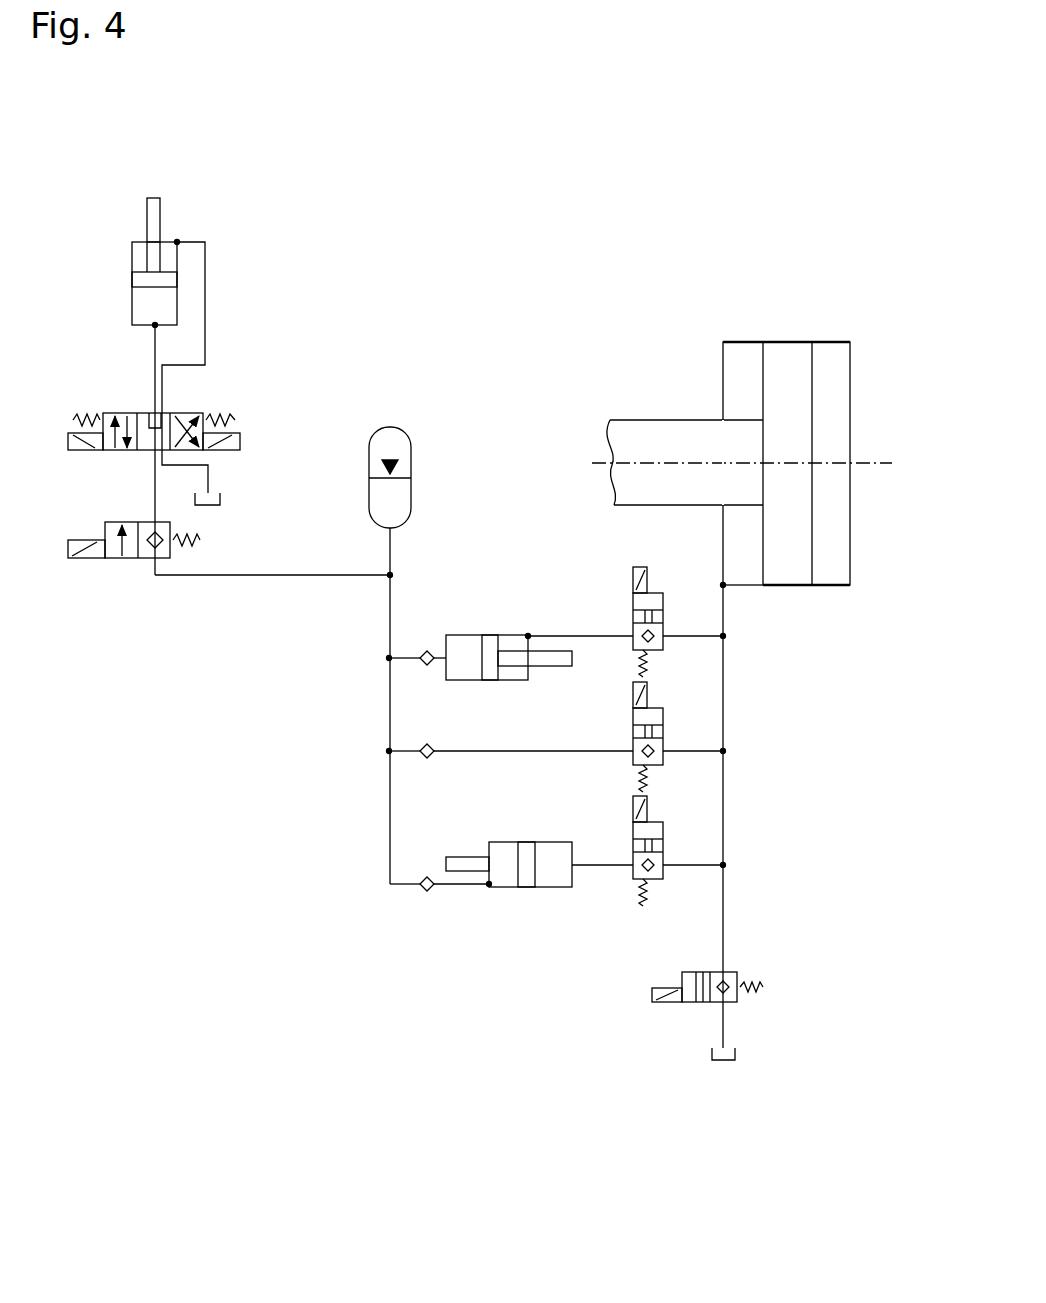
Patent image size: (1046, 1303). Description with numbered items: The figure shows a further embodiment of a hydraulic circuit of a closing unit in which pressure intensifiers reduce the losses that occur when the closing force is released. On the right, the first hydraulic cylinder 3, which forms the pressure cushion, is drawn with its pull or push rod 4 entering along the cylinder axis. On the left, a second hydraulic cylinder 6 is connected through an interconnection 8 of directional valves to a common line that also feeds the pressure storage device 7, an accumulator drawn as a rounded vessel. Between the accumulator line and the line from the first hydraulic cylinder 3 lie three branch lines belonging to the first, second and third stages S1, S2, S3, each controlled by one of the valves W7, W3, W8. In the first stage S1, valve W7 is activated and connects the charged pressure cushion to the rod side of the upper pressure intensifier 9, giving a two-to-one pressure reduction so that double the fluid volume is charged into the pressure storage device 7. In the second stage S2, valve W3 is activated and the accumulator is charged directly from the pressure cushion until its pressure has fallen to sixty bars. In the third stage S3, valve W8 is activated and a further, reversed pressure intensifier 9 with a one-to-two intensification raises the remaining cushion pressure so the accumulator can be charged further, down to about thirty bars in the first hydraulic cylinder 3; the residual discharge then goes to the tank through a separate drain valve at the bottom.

The first hydraulic cylinder 3 is at (778, 312).
The pull or push rod 4 is at (678, 442).
The second hydraulic cylinder 6 is at (165, 182).
The pressure storage device 7 is at (393, 420).
The interconnection 8 is at (232, 400).
The pressure intensifier 9 is at (488, 612).
The valve W7 is at (608, 577).
The valve W3 is at (678, 725).
The valve W8 is at (636, 912).
The first stage S1 is at (360, 664).
The second stage S2 is at (360, 754).
The third stage S3 is at (360, 878).